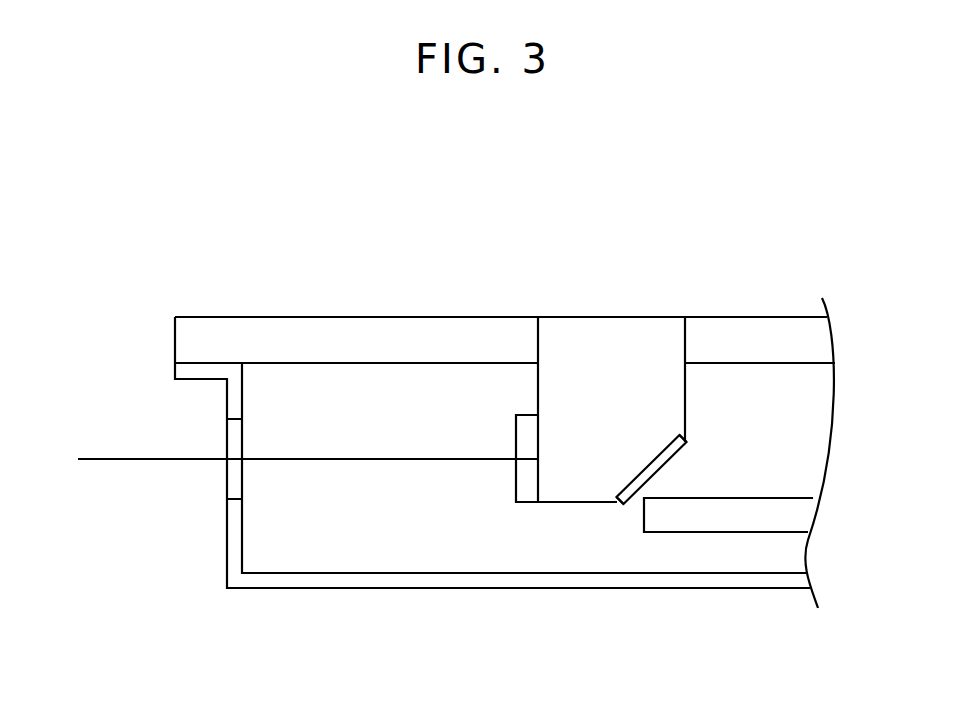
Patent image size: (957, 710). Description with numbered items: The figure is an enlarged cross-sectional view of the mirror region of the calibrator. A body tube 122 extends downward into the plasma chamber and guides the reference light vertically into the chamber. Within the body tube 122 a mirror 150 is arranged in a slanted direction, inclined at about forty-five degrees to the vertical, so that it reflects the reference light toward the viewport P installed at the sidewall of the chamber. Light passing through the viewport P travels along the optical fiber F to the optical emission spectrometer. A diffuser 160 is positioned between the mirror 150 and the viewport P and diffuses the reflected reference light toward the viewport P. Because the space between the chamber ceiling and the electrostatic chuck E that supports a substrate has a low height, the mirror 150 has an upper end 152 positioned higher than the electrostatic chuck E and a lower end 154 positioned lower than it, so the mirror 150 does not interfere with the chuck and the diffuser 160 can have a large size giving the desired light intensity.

The body tube 122 is at (687, 397).
The mirror 150 is at (633, 497).
The upper end 152 is at (683, 433).
The lower end 154 is at (617, 503).
The diffuser 160 is at (526, 490).
The electrostatic chuck E is at (735, 522).
The optical fiber F is at (105, 461).
The viewport P is at (231, 479).